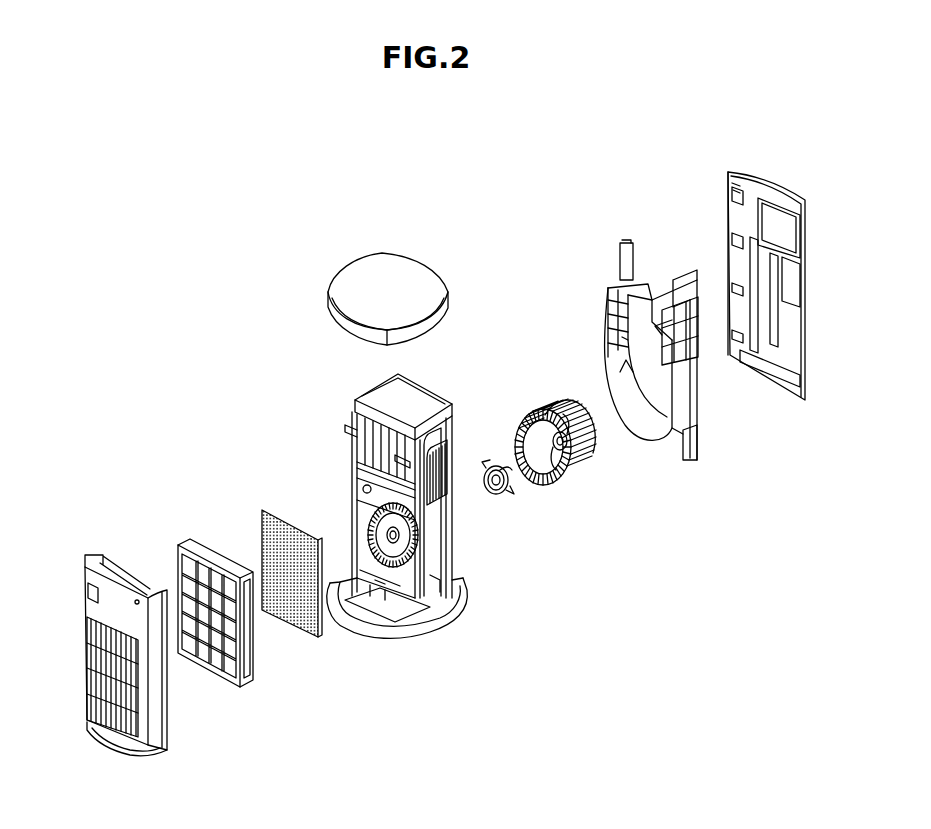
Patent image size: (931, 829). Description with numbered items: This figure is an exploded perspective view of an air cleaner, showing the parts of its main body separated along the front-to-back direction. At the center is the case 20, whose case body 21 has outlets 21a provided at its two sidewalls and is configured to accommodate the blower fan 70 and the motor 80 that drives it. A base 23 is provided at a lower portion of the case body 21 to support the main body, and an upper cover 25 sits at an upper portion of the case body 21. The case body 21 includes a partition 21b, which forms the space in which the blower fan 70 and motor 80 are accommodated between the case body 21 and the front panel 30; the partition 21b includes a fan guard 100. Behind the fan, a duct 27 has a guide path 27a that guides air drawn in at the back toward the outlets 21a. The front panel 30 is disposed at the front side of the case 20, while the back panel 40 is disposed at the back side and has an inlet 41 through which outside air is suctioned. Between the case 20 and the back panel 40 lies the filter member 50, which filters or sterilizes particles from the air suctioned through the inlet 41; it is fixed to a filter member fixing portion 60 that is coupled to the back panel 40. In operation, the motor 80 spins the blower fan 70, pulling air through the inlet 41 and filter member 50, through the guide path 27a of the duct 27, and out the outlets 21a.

The case 20 is at (405, 492).
The case body 21 is at (465, 507).
The outlet 21a is at (452, 480).
The partition 21b is at (365, 491).
The base 23 is at (458, 598).
The upper cover 25 is at (430, 283).
The duct 27 is at (628, 350).
The guide path 27a is at (622, 360).
The front panel 30 is at (776, 169).
The back panel 40 is at (99, 649).
The inlet 41 is at (90, 656).
The filter member 50 is at (259, 505).
The filter member fixing portion 60 is at (178, 545).
The blower fan 70 is at (581, 486).
The motor 80 is at (505, 490).
The fan guard 100 is at (364, 513).